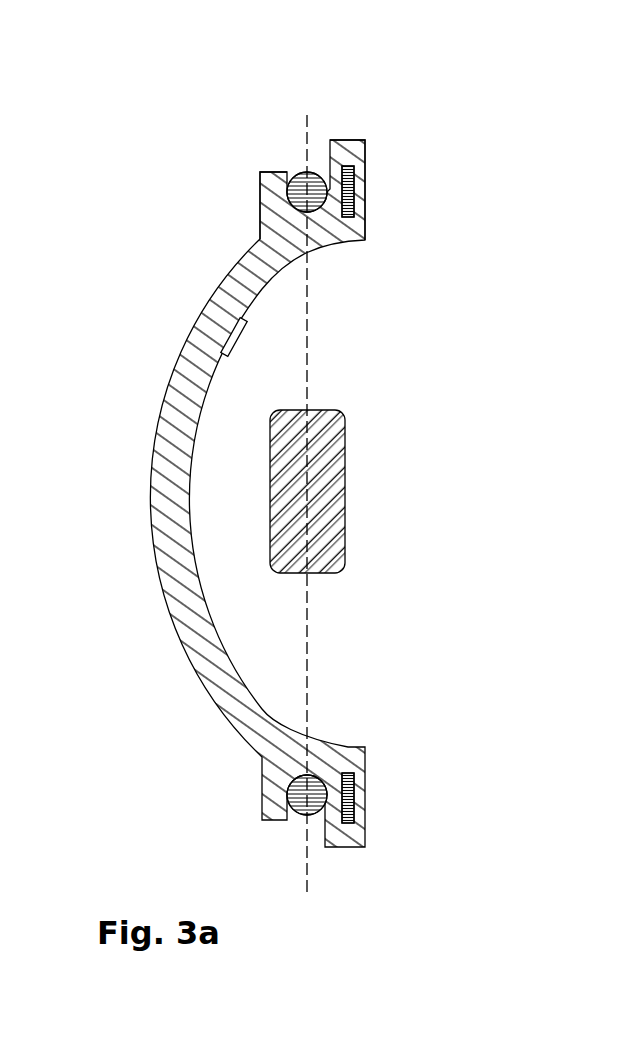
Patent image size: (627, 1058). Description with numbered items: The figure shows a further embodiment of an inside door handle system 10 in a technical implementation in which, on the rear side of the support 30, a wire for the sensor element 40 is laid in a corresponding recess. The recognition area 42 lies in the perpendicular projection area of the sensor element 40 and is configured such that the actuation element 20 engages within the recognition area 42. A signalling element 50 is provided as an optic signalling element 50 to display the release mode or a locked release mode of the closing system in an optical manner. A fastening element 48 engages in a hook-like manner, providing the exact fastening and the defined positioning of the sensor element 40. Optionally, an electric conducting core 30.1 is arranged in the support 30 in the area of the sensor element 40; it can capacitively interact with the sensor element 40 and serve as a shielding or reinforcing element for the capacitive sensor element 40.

The inside door handle system 10 is at (307, 458).
The actuation element 20 is at (323, 500).
The support 30 is at (366, 222).
The electric conducting core 30.1 is at (343, 168).
The sensor element 40 is at (298, 172).
The recognition area 42 is at (405, 372).
The fastening element 48 is at (262, 217).
The signalling element 50 is at (237, 342).